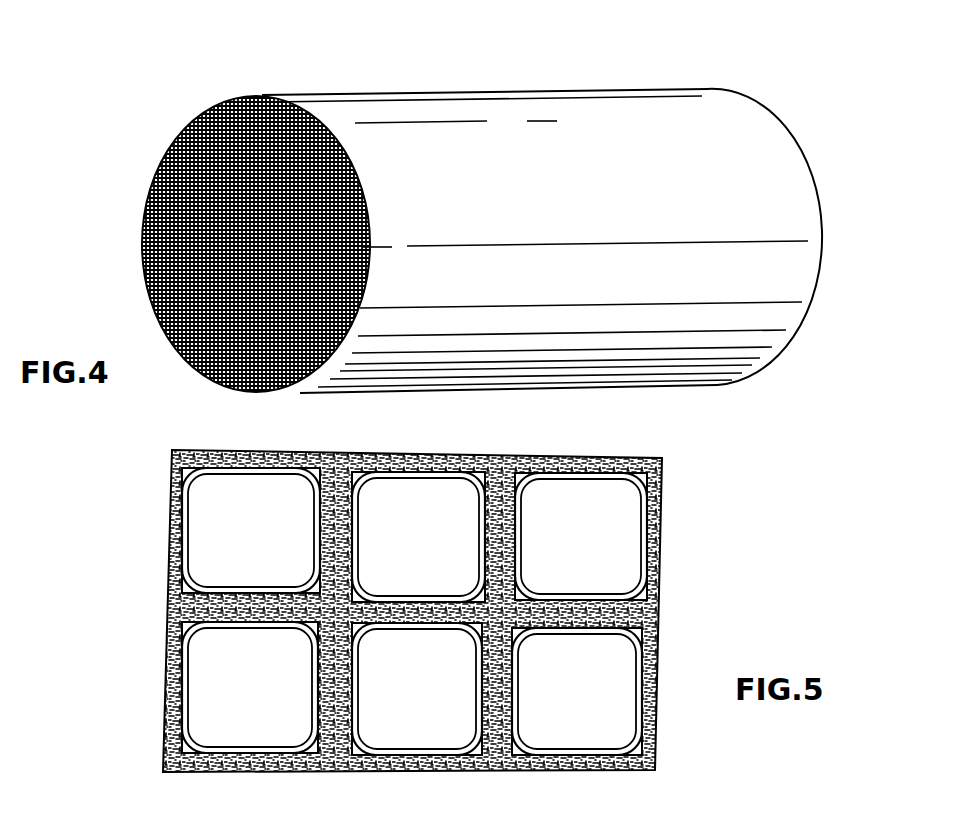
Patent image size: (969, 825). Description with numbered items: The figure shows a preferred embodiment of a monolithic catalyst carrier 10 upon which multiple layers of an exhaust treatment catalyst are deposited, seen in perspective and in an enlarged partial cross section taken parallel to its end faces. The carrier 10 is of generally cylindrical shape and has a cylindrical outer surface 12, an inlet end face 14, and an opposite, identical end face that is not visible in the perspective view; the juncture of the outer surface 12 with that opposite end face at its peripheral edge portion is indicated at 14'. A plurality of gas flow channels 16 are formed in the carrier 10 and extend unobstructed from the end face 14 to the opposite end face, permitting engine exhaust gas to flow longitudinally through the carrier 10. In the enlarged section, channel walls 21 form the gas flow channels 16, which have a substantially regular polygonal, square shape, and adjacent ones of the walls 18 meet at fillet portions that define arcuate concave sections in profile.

In FIG. 4, the catalyst carrier 10 is at (467, 218).
In FIG. 4, the cylindrical outer surface 12 is at (513, 108).
In FIG. 4, the end face (inlet) 14 is at (226, 244).
In FIG. 4, the juncture of outer surface with opposite end face 14' is at (780, 237).
In FIG. 4, the gas flow channels 16 is at (146, 242).
In FIG. 5, the gas flow channels 16 is at (262, 545).
In FIG. 5, the walls 18 is at (484, 566).
In FIG. 5, the channel walls 21 is at (197, 592).